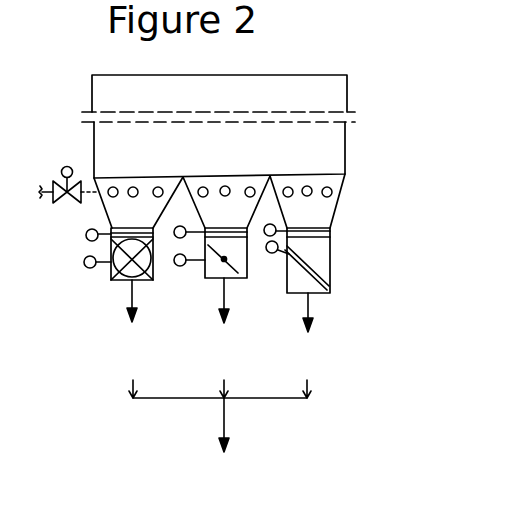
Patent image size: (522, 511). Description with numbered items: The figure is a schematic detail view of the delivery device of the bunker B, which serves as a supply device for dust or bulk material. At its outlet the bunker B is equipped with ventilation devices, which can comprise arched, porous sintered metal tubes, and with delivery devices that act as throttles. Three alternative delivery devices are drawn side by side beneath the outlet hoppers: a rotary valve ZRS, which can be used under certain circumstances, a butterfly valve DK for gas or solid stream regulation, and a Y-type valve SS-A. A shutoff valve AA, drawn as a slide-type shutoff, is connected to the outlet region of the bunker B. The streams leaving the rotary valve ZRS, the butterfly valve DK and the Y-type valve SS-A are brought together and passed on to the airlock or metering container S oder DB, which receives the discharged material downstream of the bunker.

The bunker B is at (218, 126).
The shutoff valve AA is at (164, 205).
The rotary valve ZRS is at (133, 328).
The butterfly valve DK is at (220, 327).
The Y-type valve SS-A is at (316, 334).
The airlock or metering container S oder DB is at (229, 429).